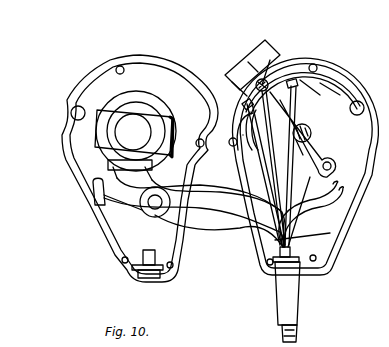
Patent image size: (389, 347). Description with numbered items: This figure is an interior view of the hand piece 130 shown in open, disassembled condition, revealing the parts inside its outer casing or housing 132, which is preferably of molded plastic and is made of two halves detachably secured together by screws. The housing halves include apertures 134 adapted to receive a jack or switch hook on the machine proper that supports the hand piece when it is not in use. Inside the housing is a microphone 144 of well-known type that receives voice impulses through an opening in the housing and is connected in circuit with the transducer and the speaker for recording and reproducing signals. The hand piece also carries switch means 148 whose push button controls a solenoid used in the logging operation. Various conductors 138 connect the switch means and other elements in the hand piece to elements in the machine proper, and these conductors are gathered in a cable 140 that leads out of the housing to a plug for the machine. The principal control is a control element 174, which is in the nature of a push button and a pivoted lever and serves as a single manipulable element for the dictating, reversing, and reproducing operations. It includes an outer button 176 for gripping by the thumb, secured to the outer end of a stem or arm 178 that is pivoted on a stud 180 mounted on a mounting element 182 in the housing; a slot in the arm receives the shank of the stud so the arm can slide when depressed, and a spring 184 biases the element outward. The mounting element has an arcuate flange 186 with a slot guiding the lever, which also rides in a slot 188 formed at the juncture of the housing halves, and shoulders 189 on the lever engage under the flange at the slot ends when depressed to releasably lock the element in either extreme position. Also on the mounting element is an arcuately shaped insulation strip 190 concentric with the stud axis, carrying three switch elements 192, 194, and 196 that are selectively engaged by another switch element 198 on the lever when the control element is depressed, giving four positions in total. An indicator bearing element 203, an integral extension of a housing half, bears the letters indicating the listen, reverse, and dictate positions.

The hand piece 130 is at (230, 33).
The housing 132 is at (249, 269).
The apertures 134 is at (75, 106).
The conductors 138 is at (247, 198).
The cable 140 is at (298, 326).
The microphone 144 is at (124, 108).
The switch means 148 is at (150, 213).
The control element 174 is at (271, 42).
The outer button 176 is at (258, 60).
The arm 178 is at (250, 78).
The stud 180 is at (300, 142).
The mounting element 182 is at (315, 123).
The spring 184 is at (301, 122).
The arcuate flange 186 is at (308, 80).
The slot 188 is at (290, 64).
The shoulders 189 is at (240, 84).
The insulation strip 190 is at (321, 84).
The switch element 192 is at (237, 130).
The switch element 194 is at (240, 114).
The switch element 196 is at (280, 64).
The switch element 198 is at (262, 65).
The indicator bearing element 203 is at (141, 55).